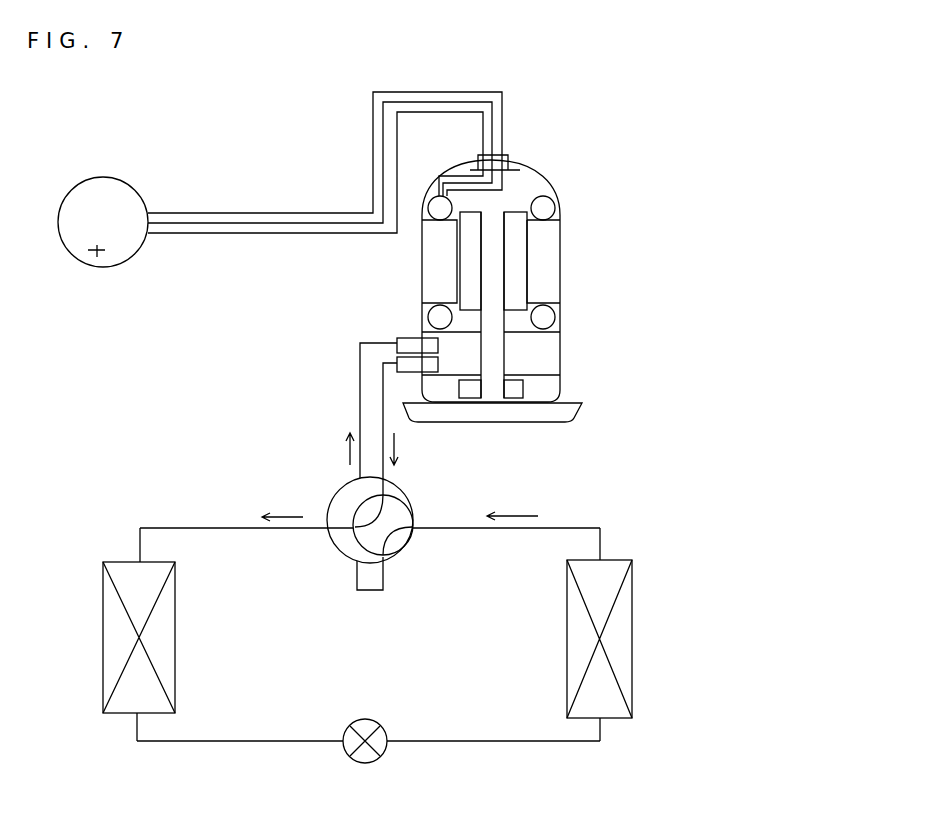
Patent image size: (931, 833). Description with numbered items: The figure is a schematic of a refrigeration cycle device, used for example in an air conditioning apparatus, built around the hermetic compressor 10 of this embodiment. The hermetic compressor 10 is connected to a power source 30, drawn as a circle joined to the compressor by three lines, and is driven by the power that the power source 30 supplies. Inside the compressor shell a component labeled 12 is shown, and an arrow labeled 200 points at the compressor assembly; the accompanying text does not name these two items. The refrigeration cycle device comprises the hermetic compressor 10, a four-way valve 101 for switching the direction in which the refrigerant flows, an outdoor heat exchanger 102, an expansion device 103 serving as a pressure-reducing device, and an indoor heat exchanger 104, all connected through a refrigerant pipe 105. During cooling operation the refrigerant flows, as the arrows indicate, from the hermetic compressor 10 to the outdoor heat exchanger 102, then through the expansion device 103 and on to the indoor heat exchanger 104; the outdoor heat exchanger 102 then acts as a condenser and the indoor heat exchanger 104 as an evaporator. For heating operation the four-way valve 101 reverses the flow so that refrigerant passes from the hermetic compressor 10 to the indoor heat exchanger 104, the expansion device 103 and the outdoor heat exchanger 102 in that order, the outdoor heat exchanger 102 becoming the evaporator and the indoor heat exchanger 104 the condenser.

The hermetic compressor 10 is at (550, 166).
The electric motor 12 is at (550, 272).
The power source 30 is at (97, 250).
The four-way valve 101 is at (410, 510).
The outdoor heat exchanger 102 is at (178, 633).
The expansion device 103 is at (367, 718).
The indoor heat exchanger 104 is at (633, 647).
The refrigerant pipe 105 is at (420, 742).
The refrigeration cycle apparatus 200 is at (583, 244).